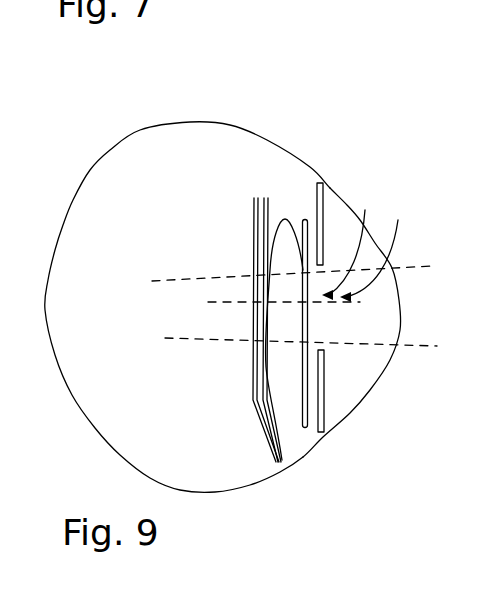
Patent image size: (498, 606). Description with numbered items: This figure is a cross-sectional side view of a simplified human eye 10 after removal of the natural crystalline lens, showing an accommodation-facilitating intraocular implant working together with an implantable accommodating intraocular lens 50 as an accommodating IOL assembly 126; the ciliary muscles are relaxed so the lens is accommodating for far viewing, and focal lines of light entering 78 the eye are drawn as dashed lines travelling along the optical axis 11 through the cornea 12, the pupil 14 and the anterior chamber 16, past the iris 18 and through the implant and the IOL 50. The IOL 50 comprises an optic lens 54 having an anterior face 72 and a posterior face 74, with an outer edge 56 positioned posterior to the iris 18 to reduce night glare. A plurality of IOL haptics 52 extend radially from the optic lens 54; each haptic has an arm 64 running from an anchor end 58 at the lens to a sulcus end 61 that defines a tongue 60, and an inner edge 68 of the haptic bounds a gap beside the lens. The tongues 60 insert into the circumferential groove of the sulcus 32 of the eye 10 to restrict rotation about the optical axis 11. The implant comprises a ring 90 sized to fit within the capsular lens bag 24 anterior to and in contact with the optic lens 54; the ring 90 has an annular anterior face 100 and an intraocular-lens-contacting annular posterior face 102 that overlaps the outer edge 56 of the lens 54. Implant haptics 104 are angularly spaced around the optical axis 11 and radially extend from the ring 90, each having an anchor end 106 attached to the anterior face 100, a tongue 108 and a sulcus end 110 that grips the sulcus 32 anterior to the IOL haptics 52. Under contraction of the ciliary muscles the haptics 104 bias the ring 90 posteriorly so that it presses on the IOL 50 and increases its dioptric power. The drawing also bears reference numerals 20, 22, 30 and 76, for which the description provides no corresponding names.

The eye 10 is at (97, 112).
The optical axis 11 is at (226, 302).
The cornea 12 is at (320, 183).
The pupil 14 is at (401, 272).
The anterior chamber 16 is at (386, 336).
The iris 18 is at (320, 208).
The posterior element 20 is at (287, 460).
The pupil 22 is at (318, 235).
The capsular lens bag 24 is at (280, 413).
The eye 30 is at (146, 229).
The sulcus 32 is at (300, 438).
The implantable accommodating intraocular lens 50 is at (271, 251).
The IOL haptics 52 is at (265, 200).
The optic lens 54 is at (269, 259).
The outer edge of the optic lens 56 is at (262, 376).
The anchor end 58 is at (276, 235).
The tongue 60 is at (304, 219).
The sulcus end 61 is at (285, 219).
The arm 64 is at (257, 198).
The inner edge of the haptic 68 is at (262, 418).
The anterior face 72 is at (303, 336).
The posterior face 74 is at (269, 271).
The lower axis line 76 is at (165, 338).
The light entering the eye 78 is at (418, 269).
The ring 90 is at (305, 393).
The annular anterior face 100 is at (305, 383).
The intraocular-lens-contacting annular posterior face 102 is at (293, 457).
The implant haptics 104 is at (290, 216).
The anchor end 106 is at (305, 413).
The tongue 108 is at (340, 410).
The sulcus end 110 is at (318, 178).
The accommodating IOL assembly 126 is at (392, 266).